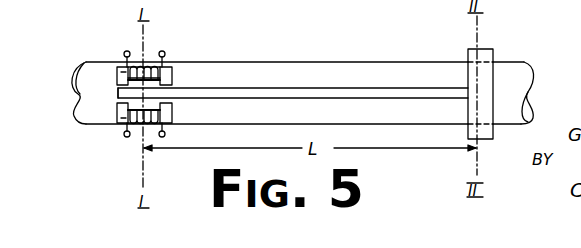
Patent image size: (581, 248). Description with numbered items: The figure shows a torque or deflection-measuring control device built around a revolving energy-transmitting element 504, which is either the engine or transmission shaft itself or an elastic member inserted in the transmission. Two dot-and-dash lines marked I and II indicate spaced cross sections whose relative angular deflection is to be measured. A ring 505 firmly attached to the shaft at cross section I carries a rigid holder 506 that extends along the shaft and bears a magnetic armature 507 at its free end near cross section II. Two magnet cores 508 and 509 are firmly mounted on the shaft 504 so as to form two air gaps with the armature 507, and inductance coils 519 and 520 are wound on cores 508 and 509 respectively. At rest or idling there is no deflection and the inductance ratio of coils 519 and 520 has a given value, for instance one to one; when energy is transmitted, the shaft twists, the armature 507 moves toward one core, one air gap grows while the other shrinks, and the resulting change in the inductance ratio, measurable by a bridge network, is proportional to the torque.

The revolving energy-transmitting element 504 is at (240, 71).
The ring 505 is at (468, 53).
The rigid holder 506 is at (295, 96).
The magnetic armature 507 is at (117, 94).
The magnet core 508 is at (121, 80).
The magnet core 509 is at (118, 120).
The inductance coil 519 is at (150, 67).
The inductance coil 520 is at (140, 127).